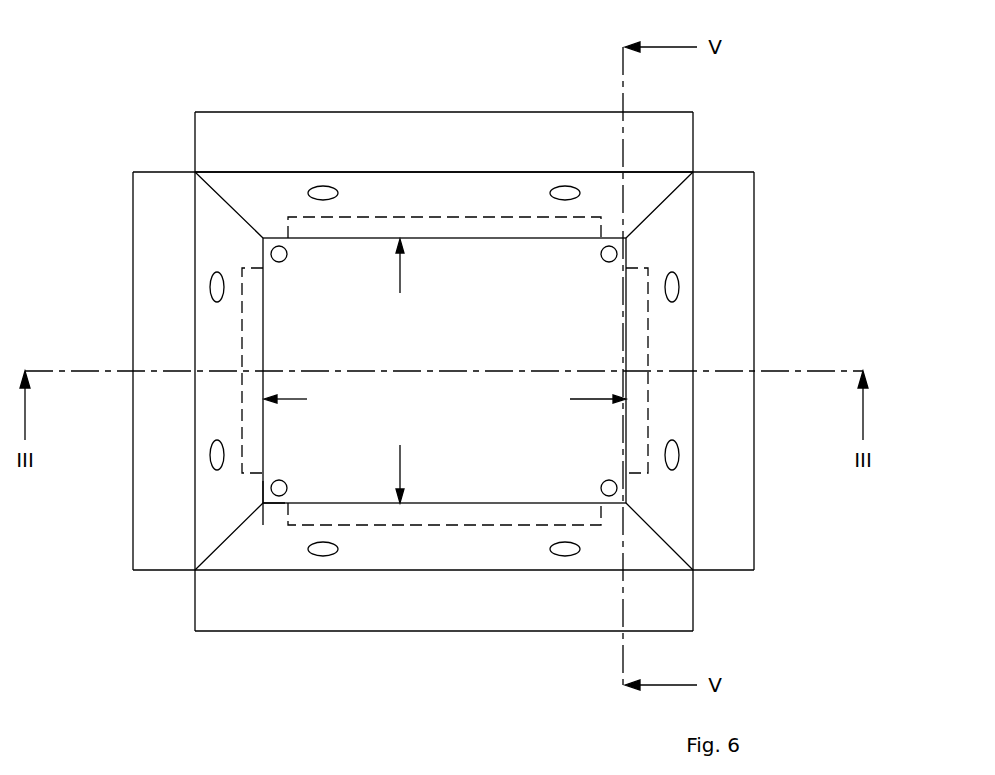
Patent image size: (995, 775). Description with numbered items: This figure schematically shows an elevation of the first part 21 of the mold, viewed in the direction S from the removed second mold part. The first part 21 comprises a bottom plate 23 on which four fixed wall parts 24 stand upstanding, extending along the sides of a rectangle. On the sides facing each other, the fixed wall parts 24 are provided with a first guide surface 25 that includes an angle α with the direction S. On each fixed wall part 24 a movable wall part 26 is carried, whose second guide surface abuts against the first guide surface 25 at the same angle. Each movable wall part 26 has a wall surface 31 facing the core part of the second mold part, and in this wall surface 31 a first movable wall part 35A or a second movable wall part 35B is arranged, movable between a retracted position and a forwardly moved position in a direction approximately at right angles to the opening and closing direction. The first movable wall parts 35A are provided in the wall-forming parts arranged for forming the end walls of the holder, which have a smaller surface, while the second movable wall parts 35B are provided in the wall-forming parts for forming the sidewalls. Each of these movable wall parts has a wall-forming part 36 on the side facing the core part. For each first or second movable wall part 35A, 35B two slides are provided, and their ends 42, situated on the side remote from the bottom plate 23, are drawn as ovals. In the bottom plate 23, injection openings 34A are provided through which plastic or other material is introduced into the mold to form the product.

The first part 21 is at (453, 365).
The bottom plate 23 is at (374, 267).
The fixed wall parts 24 is at (267, 133).
The first guide surface 25 is at (444, 104).
The movable wall part 26 is at (423, 193).
The wall surface 31 is at (252, 498).
The injection openings 34A is at (285, 260).
The first movable wall parts 35A is at (250, 338).
The second movable wall parts 35B is at (477, 227).
The wall-forming part 36 is at (445, 371).
The end of the slide 42 is at (323, 193).